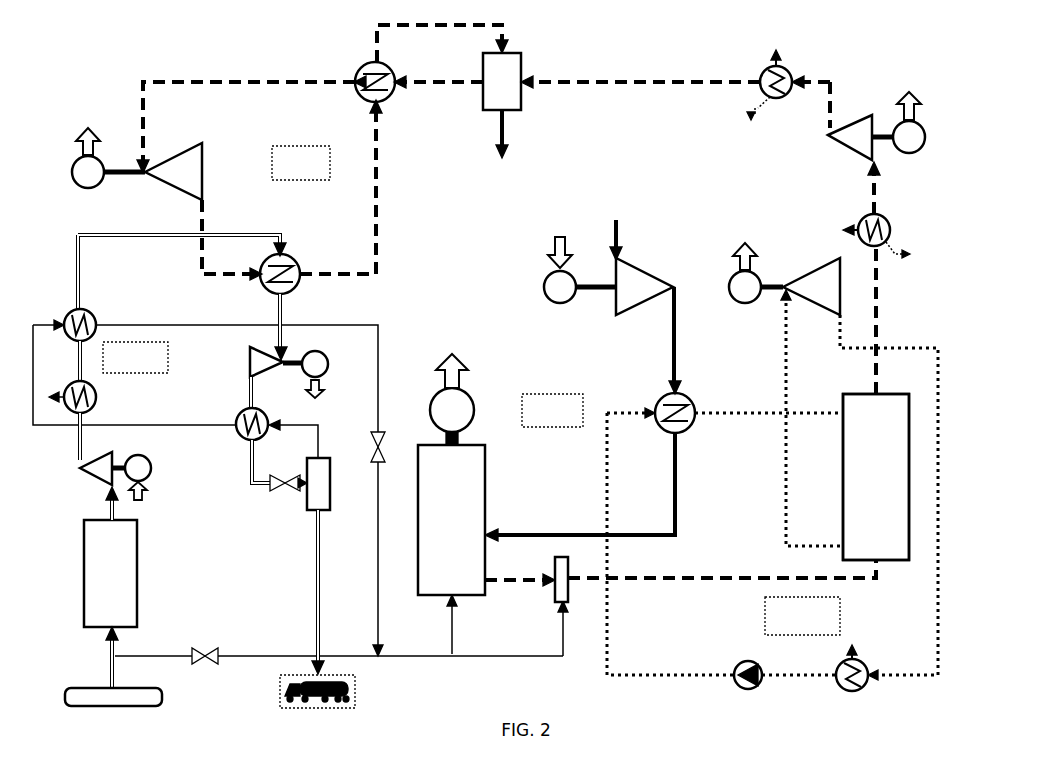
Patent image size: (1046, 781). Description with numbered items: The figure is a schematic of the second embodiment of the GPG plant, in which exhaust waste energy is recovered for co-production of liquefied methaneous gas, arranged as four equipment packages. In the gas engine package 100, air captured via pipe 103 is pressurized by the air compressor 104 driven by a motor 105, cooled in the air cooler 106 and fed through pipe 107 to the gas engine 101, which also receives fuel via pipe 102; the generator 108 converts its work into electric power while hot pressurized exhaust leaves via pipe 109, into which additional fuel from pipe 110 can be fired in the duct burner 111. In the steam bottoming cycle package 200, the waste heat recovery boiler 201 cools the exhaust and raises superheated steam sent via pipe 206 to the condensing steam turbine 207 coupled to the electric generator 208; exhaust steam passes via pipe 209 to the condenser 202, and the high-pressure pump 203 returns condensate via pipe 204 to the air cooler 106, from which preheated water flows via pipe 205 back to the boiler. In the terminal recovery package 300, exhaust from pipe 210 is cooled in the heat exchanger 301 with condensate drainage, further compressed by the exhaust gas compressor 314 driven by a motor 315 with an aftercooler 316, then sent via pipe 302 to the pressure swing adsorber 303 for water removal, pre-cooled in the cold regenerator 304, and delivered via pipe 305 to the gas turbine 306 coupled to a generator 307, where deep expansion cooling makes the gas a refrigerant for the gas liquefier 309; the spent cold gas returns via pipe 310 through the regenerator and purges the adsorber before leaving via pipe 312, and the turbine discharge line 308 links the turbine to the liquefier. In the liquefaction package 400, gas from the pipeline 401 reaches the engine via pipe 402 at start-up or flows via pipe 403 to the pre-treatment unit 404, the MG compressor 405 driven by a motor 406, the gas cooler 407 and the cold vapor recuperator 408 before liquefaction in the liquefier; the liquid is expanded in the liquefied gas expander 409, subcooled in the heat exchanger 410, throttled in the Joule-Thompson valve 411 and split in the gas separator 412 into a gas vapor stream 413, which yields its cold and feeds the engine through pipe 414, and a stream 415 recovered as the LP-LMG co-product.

The supercharged reciprocating gas engine package 100 is at (552, 410).
The gas engine 101 is at (487, 458).
The pipe 102 is at (454, 640).
The pipe 103 is at (620, 244).
The air compressor 104 is at (592, 295).
The motor 105 is at (550, 300).
The air cooler 106 is at (662, 400).
The pipe 107 is at (512, 530).
The generator 108 is at (474, 396).
The pipe 109 is at (540, 582).
The pipe 110 is at (550, 656).
The duct burner 111 is at (552, 566).
The steam bottoming cycle package 200 is at (802, 616).
The waste heat recovery boiler 201 is at (900, 562).
The condenser 202 is at (868, 660).
The high-pressure pump 203 is at (740, 663).
The pipe 204 is at (612, 636).
The pipe 205 is at (704, 410).
The pipe 206 is at (831, 443).
The condensing steam turbine 207 is at (824, 266).
The electric generator 208 is at (742, 303).
The pipe 209 is at (846, 350).
The pipe 210 is at (880, 312).
The terminal exhaust energy recovery package 300 is at (301, 163).
The heat exchanger 301 is at (858, 218).
The pipe 302 is at (680, 90).
The pressure swing adsorber 303 is at (522, 62).
The cold regenerator 304 is at (362, 64).
The pipe 305 is at (236, 84).
The gas turbine 306 is at (204, 158).
The generator 307 is at (78, 186).
The turbine outlet line 308 is at (220, 278).
The gas liquefier 309 is at (294, 258).
The pipe 310 is at (382, 216).
The pipe 312 is at (508, 145).
The exhaust gas compressor 314 is at (870, 118).
The motor 315 is at (898, 152).
The aftercooler 316 is at (760, 72).
The methaneous gas liquefaction package 400 is at (135, 357).
The pipeline 401 is at (162, 690).
The pipe 402 is at (155, 654).
The pipe 403 is at (104, 640).
The pre-treatment unit 404 is at (138, 550).
The MG compressor 405 is at (94, 482).
The motor 406 is at (152, 466).
The gas cooler 407 is at (97, 398).
The cold vapor recuperator 408 is at (64, 310).
The liquefied gas expander 409 is at (250, 366).
The heat exchanger 410 is at (242, 438).
The Joule-Thompson valve 411 is at (270, 480).
The gas separator 412 is at (330, 504).
The gas vapor stream 413 is at (320, 430).
The pipe 414 is at (380, 326).
The stream 415 is at (316, 572).